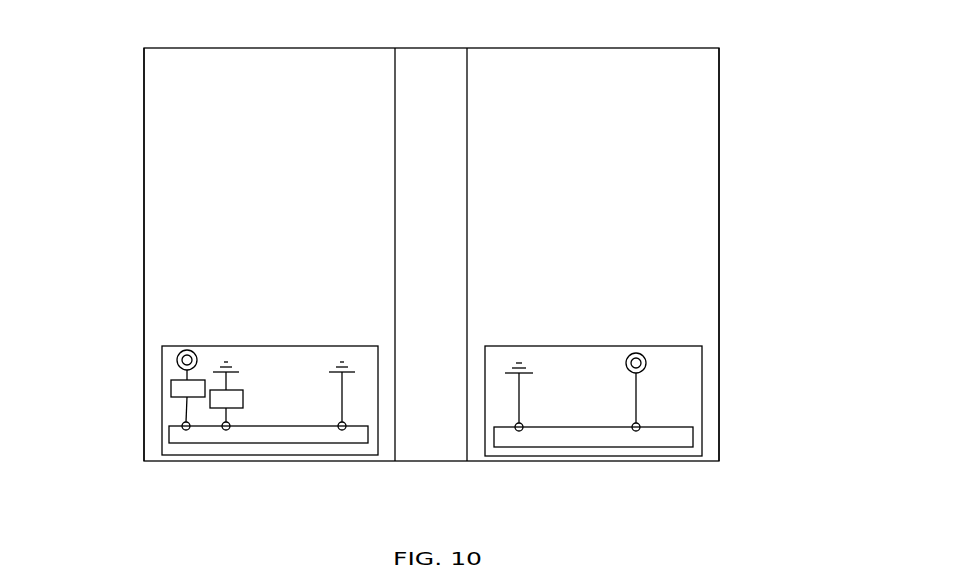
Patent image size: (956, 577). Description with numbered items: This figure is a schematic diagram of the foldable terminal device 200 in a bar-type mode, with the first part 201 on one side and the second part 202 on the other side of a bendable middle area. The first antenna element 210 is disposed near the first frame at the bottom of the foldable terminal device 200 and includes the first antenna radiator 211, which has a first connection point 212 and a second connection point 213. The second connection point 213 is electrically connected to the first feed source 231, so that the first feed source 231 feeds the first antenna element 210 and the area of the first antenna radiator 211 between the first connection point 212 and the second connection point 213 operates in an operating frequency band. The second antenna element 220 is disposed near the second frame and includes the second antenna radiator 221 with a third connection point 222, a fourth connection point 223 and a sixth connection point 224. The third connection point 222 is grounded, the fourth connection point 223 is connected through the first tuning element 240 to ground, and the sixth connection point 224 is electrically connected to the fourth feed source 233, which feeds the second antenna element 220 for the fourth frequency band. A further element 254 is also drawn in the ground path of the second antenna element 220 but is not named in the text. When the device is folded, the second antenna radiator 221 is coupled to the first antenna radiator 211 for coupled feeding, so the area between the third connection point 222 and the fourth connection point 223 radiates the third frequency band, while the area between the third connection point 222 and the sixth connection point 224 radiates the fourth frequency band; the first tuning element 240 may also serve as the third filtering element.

The foldable terminal device 200 is at (448, 36).
The first part 201 is at (719, 93).
The second part 202 is at (143, 102).
The first antenna element 210 is at (702, 355).
The first antenna radiator 211 is at (603, 447).
The first connection point 212 is at (521, 431).
The second connection point 213 is at (640, 431).
The second antenna element 220 is at (162, 360).
The second antenna radiator 221 is at (260, 443).
The third connection point 222 is at (342, 432).
The fourth connection point 223 is at (223, 430).
The sixth connection point 224 is at (182, 429).
The first feed source 231 is at (646, 365).
The fourth feed source 233 is at (184, 374).
The first tuning element 240 is at (207, 397).
The ground module 254 is at (207, 380).